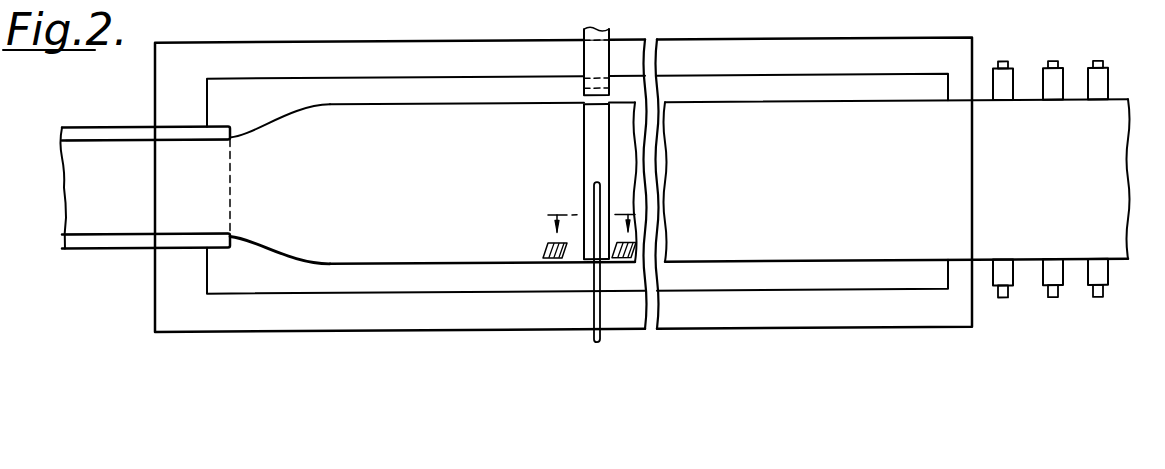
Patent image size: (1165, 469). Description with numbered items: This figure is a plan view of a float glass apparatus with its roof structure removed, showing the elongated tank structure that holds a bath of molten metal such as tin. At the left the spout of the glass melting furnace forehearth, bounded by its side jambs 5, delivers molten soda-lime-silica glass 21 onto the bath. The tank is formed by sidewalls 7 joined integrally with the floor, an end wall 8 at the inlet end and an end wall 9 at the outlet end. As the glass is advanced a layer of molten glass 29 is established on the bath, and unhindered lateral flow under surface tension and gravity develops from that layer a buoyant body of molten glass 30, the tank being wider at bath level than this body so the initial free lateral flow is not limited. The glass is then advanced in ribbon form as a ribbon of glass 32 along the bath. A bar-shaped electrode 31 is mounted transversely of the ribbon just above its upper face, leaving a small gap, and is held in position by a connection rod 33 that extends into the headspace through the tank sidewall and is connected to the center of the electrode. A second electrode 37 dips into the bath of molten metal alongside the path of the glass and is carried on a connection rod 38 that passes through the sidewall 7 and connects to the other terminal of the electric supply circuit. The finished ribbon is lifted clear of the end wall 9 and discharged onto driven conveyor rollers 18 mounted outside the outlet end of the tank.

The side jambs 5 is at (165, 129).
The sidewalls 7 is at (563, 184).
The end wall 8 is at (408, 189).
The end wall 9 is at (806, 166).
The driven conveyor rollers 18 is at (1094, 82).
The molten soda-lime-silica glass 21 is at (147, 187).
The layer of molten glass 29 is at (280, 168).
The buoyant body of molten glass 30 is at (280, 244).
The bar-shaped electrode 31 is at (590, 139).
The ribbon of glass 32 is at (730, 181).
The connection rod 33 is at (596, 305).
The second electrode 37 is at (584, 93).
The connection rod 38 is at (601, 31).